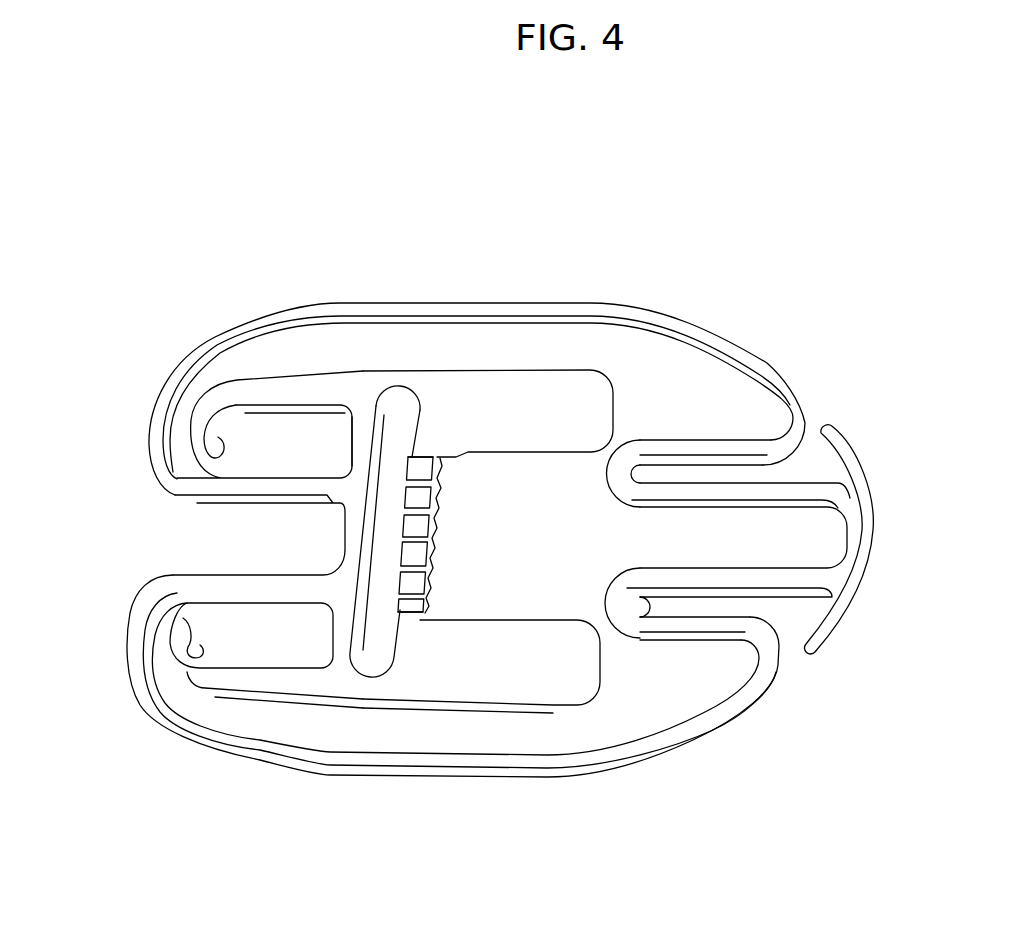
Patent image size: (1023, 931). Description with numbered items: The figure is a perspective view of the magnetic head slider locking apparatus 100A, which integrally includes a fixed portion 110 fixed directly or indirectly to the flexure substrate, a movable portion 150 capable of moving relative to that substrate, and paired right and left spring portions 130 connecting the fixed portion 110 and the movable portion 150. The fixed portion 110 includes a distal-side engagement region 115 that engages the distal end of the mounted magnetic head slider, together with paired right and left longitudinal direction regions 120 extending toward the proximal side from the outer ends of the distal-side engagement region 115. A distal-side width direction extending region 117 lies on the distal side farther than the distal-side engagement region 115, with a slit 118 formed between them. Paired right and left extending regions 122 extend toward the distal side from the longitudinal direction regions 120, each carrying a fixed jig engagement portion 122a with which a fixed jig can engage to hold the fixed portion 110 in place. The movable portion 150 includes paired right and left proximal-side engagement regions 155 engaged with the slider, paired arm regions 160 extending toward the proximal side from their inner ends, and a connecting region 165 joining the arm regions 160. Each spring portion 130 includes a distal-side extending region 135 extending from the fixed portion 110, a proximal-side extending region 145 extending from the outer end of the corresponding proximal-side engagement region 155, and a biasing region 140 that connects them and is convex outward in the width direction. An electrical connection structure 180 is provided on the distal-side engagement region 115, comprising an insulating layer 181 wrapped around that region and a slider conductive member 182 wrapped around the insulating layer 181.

The magnetic head slider locking apparatus 100A is at (780, 226).
The fixed portion 110 is at (373, 618).
The distal-side engagement region 115 is at (454, 512).
The distal-side width direction extending region 117 is at (361, 447).
The slit 118 is at (396, 418).
The longitudinal direction region 120 is at (485, 421).
The extending region 122 is at (289, 393).
The fixed jig engagement portion 122a is at (224, 436).
The spring portion 130 is at (475, 268).
The distal-side extending region 135 is at (236, 495).
The biasing region 140 is at (540, 303).
The proximal-side extending region 145 is at (684, 442).
The movable portion 150 is at (766, 541).
The proximal-side engagement region 155 is at (610, 470).
The arm region 160 is at (713, 495).
The connecting region 165 is at (868, 610).
The electrical connection structure 180 is at (449, 561).
The insulating layer 181 is at (407, 614).
The slider conductive member 182 is at (430, 603).